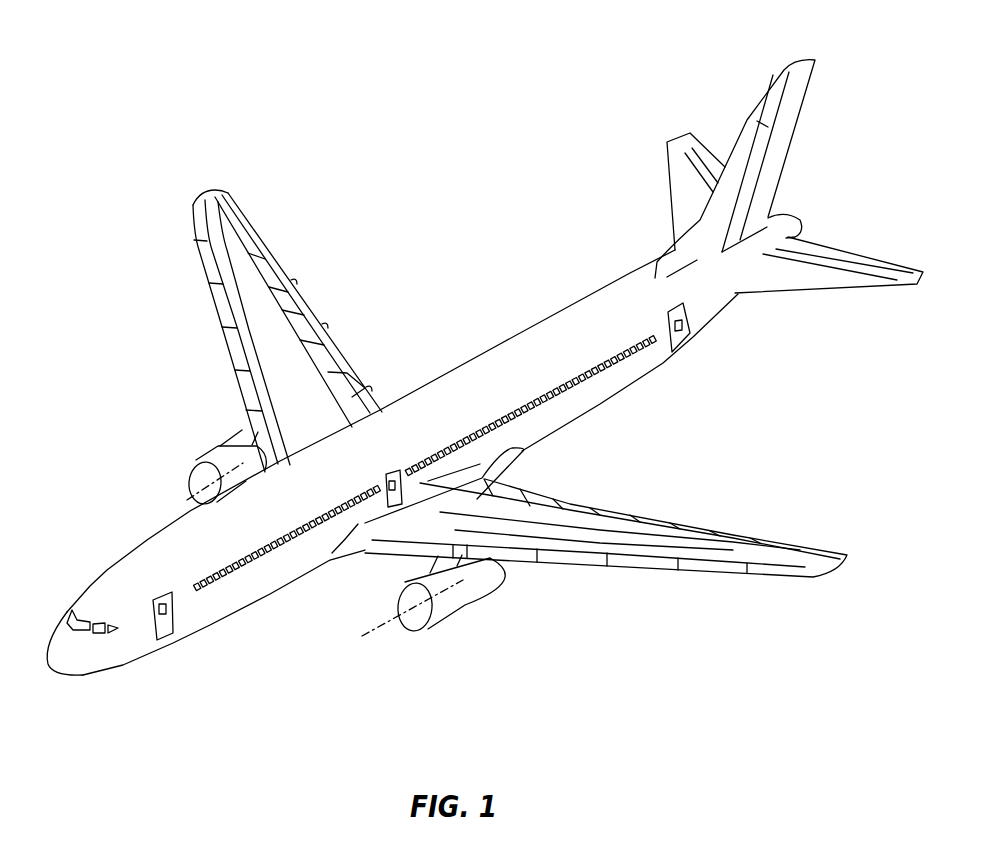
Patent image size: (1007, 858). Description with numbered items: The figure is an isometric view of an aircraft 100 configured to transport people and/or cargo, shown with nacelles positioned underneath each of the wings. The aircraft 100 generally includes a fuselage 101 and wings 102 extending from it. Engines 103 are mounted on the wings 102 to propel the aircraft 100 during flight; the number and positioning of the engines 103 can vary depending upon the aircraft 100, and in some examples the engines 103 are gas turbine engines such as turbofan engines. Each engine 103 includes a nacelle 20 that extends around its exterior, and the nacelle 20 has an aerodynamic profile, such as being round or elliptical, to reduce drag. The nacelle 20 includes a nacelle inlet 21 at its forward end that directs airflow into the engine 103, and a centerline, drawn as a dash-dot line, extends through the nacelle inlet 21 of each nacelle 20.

The aircraft 100 is at (441, 250).
The fuselage 101 is at (427, 407).
The wings 102 is at (242, 263).
The engines 103 is at (213, 458).
The nacelle 20 is at (228, 470).
The nacelle inlet 21 is at (190, 503).